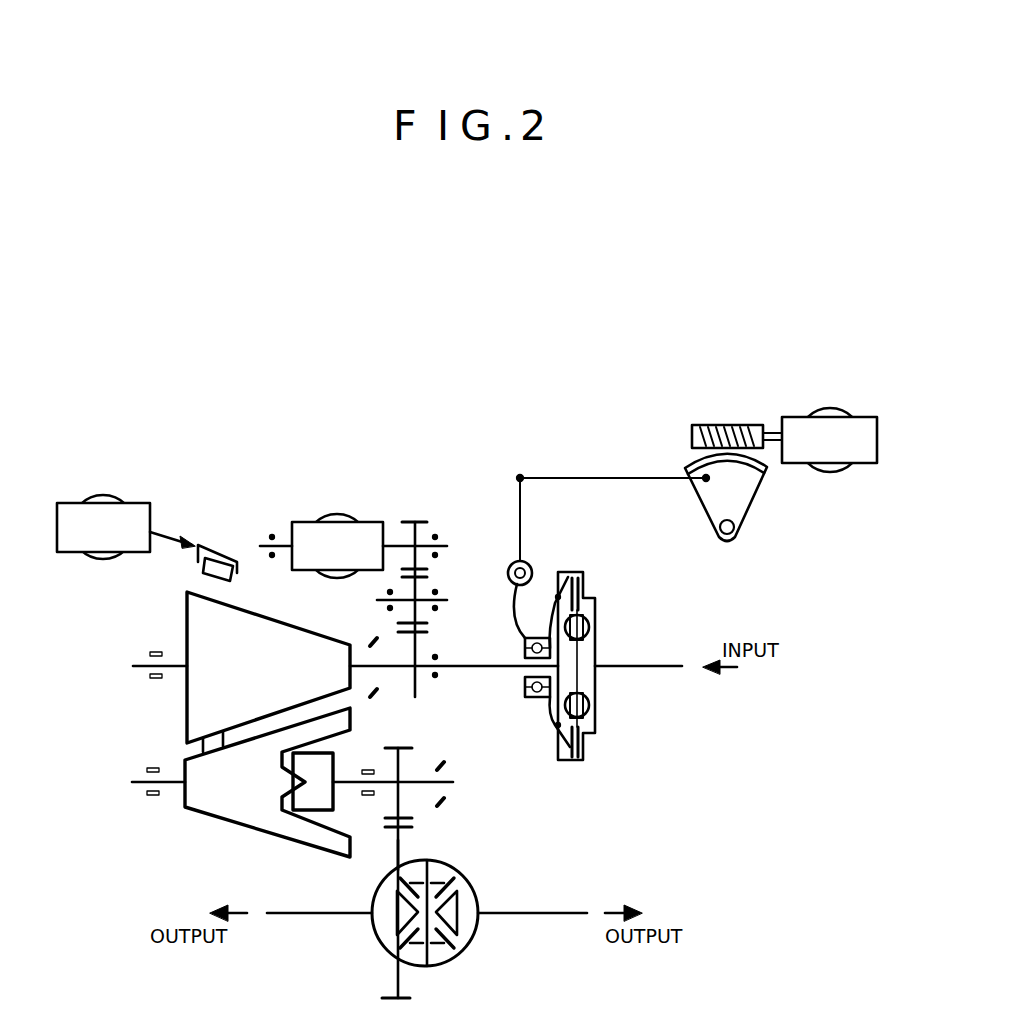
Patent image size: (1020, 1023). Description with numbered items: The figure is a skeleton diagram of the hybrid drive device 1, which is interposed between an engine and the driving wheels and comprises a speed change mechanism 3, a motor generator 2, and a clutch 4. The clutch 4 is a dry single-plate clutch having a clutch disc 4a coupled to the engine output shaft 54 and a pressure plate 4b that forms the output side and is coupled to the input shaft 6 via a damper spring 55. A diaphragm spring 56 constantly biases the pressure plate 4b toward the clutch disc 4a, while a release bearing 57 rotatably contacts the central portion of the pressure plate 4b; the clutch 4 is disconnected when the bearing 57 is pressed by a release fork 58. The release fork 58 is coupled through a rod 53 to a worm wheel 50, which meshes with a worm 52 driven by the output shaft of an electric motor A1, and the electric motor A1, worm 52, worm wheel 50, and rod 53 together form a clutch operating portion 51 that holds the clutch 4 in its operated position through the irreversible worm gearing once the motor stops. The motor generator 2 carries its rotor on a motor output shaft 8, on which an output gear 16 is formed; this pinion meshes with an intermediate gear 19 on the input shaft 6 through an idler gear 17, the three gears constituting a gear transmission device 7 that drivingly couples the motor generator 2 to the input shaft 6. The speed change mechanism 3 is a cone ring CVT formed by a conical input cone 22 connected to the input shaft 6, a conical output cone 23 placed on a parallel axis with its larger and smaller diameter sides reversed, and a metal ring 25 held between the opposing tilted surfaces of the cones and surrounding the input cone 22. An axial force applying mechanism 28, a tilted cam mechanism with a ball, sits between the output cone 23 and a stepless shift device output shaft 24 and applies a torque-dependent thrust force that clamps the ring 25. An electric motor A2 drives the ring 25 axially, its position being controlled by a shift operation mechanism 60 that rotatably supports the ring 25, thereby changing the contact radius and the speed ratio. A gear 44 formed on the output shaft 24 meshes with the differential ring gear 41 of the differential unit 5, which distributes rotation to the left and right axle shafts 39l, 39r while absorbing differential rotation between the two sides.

The hybrid drive device 1 is at (327, 443).
The motor generator 2 is at (302, 528).
The speed change mechanism 3 is at (234, 739).
The clutch 4 is at (583, 654).
The clutch disc 4a is at (588, 745).
The pressure plate 4b is at (580, 676).
The differential unit 5 is at (378, 953).
The input shaft 6 is at (455, 670).
The gear transmission device 7 is at (435, 547).
The motor output shaft 8 is at (420, 540).
The output gear 16 is at (413, 518).
The idler gear 17 is at (418, 585).
The intermediate gear 19 is at (420, 648).
The input cone 22 is at (252, 630).
The output cone 23 is at (228, 822).
The stepless shift device output shaft 24 is at (442, 788).
The ring 25 is at (203, 742).
The axial force applying mechanism 28 is at (313, 810).
The left axle shaft 39l is at (297, 913).
The right axle shaft 39r is at (508, 912).
The differential ring gear 41 is at (400, 856).
The gear 44 is at (403, 775).
The worm wheel 50 is at (743, 500).
The clutch operating portion 51 is at (528, 463).
The worm 52 is at (725, 426).
The rod 53 is at (565, 477).
The engine output shaft 54 is at (640, 672).
The damper spring 55 is at (597, 624).
The diaphragm spring 56 is at (552, 625).
The release bearing 57 is at (530, 700).
The release fork 58 is at (512, 628).
The shift operation mechanism 60 is at (214, 543).
The electric motor A1 is at (835, 406).
The electric motor A2 is at (137, 502).